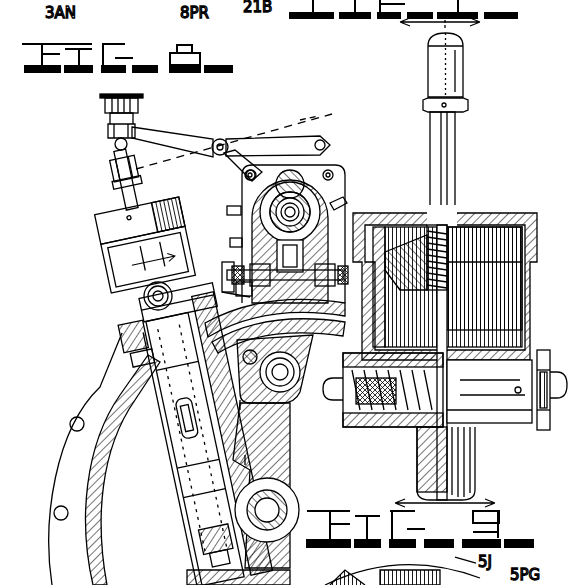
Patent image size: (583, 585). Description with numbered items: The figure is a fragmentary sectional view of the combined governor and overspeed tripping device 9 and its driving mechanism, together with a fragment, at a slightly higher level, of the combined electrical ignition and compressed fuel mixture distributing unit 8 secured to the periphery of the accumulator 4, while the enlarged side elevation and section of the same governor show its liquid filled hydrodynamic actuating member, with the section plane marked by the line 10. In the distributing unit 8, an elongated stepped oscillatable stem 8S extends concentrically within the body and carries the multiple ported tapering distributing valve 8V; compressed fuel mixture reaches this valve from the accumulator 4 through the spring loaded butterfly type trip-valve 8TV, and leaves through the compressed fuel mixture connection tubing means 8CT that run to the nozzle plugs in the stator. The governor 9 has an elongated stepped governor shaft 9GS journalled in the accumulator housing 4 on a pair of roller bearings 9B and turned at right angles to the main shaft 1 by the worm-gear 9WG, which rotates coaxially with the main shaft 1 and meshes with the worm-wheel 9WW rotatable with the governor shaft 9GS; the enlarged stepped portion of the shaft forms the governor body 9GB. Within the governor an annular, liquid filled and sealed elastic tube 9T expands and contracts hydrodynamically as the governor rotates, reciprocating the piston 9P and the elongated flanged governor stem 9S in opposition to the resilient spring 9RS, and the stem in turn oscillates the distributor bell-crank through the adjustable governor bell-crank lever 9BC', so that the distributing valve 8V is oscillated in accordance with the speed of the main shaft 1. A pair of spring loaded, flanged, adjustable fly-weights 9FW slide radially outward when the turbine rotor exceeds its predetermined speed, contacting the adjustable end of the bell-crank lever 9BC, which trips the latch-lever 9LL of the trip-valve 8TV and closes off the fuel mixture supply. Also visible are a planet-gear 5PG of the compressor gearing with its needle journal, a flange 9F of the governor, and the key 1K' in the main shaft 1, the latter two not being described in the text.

In FIG. 8, the combined electrical ignition and compressed fuel mixture distributing unit 8 is at (333, 185).
In FIG. 8, the multiple ported tapering distributing valve 8V is at (322, 208).
In FIG. 8, the elongated stepped oscillatable stem 8S is at (284, 214).
In FIG. 8, the compressed fuel mixture connection tubing means 8CT is at (232, 211).
In FIG. 8, the trip-valve 8TV is at (305, 302).
In FIG. 8, the combined governor and overspeed tripping device 9 is at (110, 252).
In FIG. 9, the combined governor and overspeed tripping device 9 is at (540, 262).
In FIG. 8, the elongated flanged governor stem 9S is at (126, 186).
In FIG. 9, the elongated flanged governor stem 9S is at (458, 152).
In FIG. 8, the adjustable governor bell-crank lever 9BC' is at (232, 145).
In FIG. 8, the bell-crank lever 9BC is at (224, 260).
In FIG. 8, the latch-lever 9LL is at (232, 290).
In FIG. 8, the governor body 9GB is at (112, 267).
In FIG. 9, the governor body 9GB is at (503, 425).
In FIG. 8, the fly-weights 9FW is at (148, 298).
In FIG. 9, the fly-weights 9FW is at (330, 400).
In FIG. 8, the roller bearings 9B is at (124, 335).
In FIG. 8, the elongated stepped governor shaft 9GS is at (186, 428).
In FIG. 9, the elongated stepped governor shaft 9GS is at (476, 479).
In FIG. 8, the worm-wheel 9WW is at (200, 539).
In FIG. 8, the worm-gear 9WG is at (288, 470).
In FIG. 8, the accumulator 4 is at (100, 460).
In FIG. 8, the main shaft 1 is at (286, 500).
In FIG. 8, the planet-gear 5PG is at (260, 404).
In FIG. 8, the bracket 1K' is at (258, 448).
In FIG. 9, the elastic tube 9T is at (512, 302).
In FIG. 9, the piston 9P is at (477, 240).
In FIG. 9, the resilient spring 9RS is at (432, 232).
In FIG. 9, the flange 9F is at (566, 398).
In FIG. 9, the stroke 10 is at (438, 261).